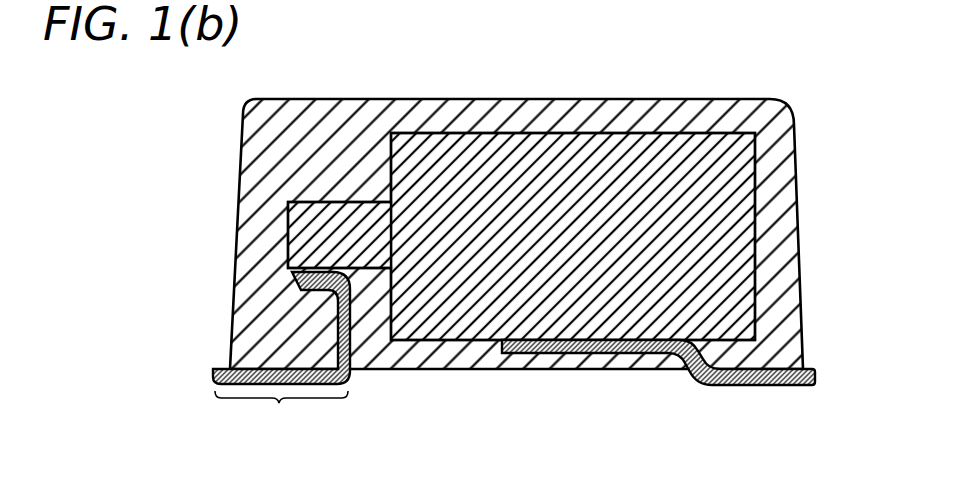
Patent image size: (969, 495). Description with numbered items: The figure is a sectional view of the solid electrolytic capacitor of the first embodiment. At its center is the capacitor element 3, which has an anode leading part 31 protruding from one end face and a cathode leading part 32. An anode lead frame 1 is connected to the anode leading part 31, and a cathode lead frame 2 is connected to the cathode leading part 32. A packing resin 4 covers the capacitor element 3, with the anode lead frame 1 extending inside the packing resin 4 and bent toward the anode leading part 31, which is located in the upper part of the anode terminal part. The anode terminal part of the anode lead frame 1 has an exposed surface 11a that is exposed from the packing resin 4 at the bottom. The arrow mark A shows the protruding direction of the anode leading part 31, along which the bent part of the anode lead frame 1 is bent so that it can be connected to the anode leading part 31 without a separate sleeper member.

The anode lead frame 1 is at (226, 367).
The cathode lead frame 2 is at (783, 387).
The capacitor element 3 is at (659, 131).
The packing resin 4 is at (786, 182).
The anode leading part 31 is at (367, 217).
The cathode leading part 32 is at (510, 143).
The exposed surface 11a is at (281, 410).
The arrow mark A is at (257, 232).